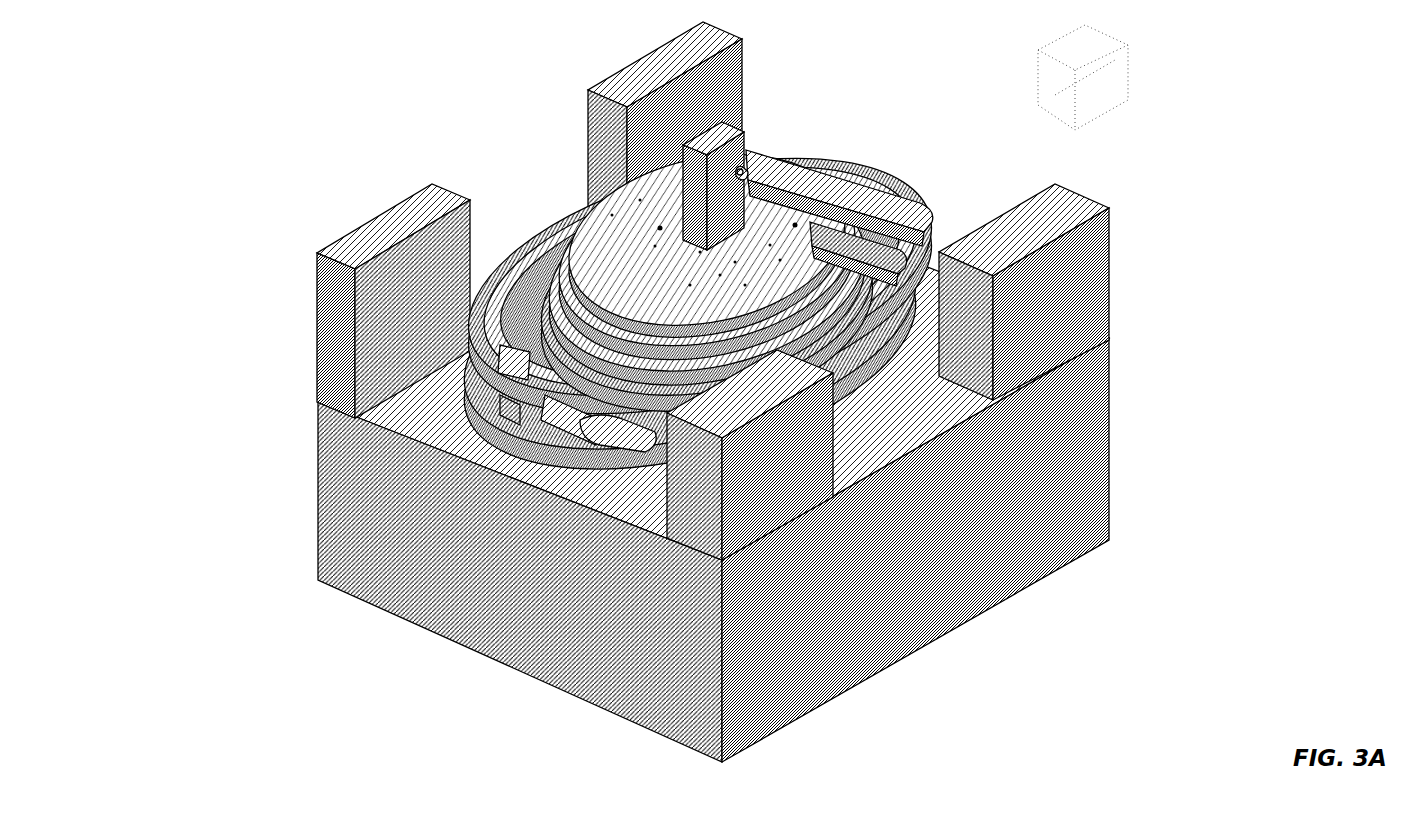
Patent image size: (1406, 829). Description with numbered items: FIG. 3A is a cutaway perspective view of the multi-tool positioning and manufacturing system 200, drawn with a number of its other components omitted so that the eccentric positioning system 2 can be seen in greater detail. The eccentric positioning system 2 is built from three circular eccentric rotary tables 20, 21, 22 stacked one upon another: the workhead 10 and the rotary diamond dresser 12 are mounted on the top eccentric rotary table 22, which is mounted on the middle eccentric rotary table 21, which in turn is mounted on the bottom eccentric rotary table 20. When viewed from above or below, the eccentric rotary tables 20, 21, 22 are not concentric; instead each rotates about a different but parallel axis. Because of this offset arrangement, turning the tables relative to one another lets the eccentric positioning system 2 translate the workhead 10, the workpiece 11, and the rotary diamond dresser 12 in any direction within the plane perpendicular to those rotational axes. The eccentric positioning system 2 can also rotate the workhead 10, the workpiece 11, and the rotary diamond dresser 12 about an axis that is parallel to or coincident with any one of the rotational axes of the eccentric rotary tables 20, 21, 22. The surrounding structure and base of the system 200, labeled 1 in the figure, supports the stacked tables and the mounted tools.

The multi-tool positioning and manufacturing system 200 is at (265, 212).
The base 1 is at (316, 506).
The eccentric positioning system 2 is at (1030, 578).
The workhead 10 is at (665, 142).
The workpiece 11 is at (746, 142).
The rotary diamond dresser 12 is at (782, 150).
The bottom eccentric rotary table 20 is at (443, 186).
The middle eccentric rotary table 21 is at (540, 187).
The top eccentric rotary table 22 is at (586, 166).